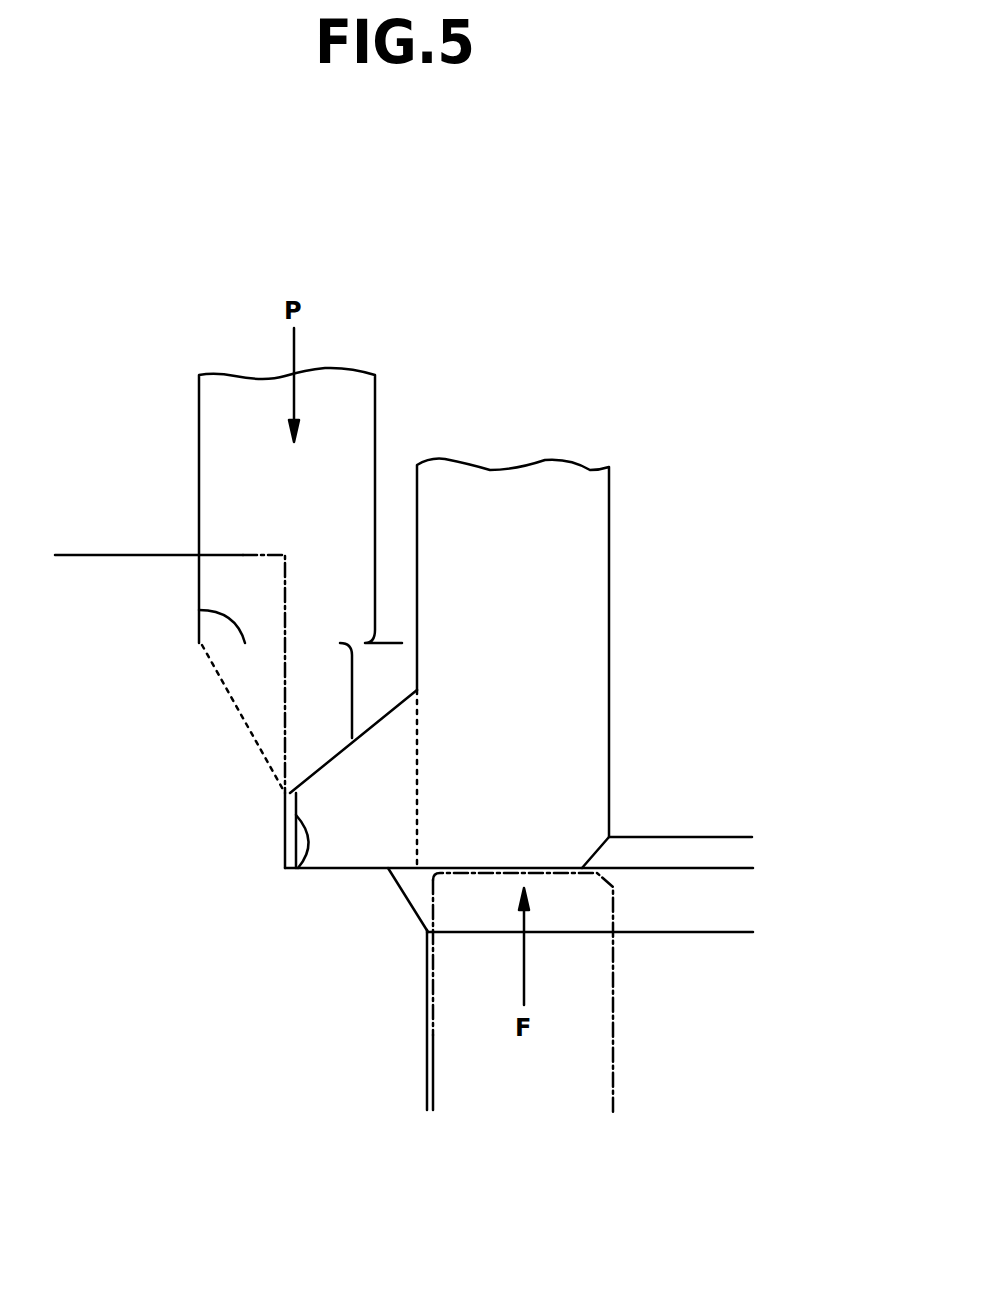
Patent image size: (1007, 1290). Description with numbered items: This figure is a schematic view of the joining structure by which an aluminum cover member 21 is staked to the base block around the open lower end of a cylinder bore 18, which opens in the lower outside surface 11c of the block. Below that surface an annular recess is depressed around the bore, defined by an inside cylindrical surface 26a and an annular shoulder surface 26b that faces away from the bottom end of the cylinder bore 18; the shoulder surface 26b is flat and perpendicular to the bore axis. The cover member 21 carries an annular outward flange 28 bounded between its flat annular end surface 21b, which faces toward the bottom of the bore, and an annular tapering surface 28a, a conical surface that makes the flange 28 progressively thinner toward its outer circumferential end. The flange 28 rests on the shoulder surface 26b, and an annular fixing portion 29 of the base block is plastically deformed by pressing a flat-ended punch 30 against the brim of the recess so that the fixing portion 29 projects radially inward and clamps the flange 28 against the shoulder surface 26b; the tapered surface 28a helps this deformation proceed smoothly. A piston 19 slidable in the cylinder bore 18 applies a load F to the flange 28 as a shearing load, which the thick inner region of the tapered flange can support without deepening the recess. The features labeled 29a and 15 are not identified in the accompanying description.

The punch 30 is at (232, 405).
The annular fixing portion 29 is at (318, 658).
The holding surface 29a is at (199, 610).
The annular tapering surface 28a is at (335, 757).
The annular outward flange 28 is at (342, 843).
The inside cylindrical surface 26a is at (297, 866).
The annular shoulder surface 26b is at (375, 850).
The cover member 21 is at (578, 607).
The flat annular end surface 21b is at (413, 900).
The piston 19 is at (580, 1068).
The cylinder bore 18 is at (433, 1073).
The joint portion 15 is at (398, 1082).
The lower outside surface 11c is at (90, 555).